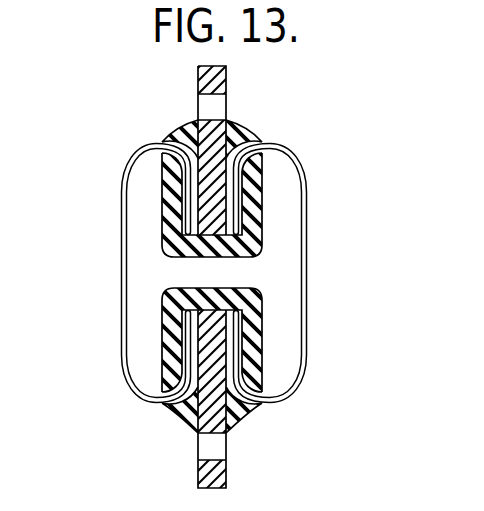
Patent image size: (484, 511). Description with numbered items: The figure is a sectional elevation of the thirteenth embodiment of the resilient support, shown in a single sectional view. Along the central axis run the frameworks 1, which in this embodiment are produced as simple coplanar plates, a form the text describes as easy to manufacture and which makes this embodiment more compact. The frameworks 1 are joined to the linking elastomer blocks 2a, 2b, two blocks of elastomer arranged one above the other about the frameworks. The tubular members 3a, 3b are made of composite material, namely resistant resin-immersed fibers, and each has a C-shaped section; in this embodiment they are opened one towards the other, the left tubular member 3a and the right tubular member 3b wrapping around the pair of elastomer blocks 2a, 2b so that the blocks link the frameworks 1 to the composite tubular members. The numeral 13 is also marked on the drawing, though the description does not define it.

The framework 1 is at (206, 83).
The linking elastomer block 2a is at (229, 230).
The linking elastomer block 2b is at (250, 322).
The tubular member 3a is at (123, 198).
The tubular member 3b is at (306, 195).
The clearance gap 13 is at (174, 255).